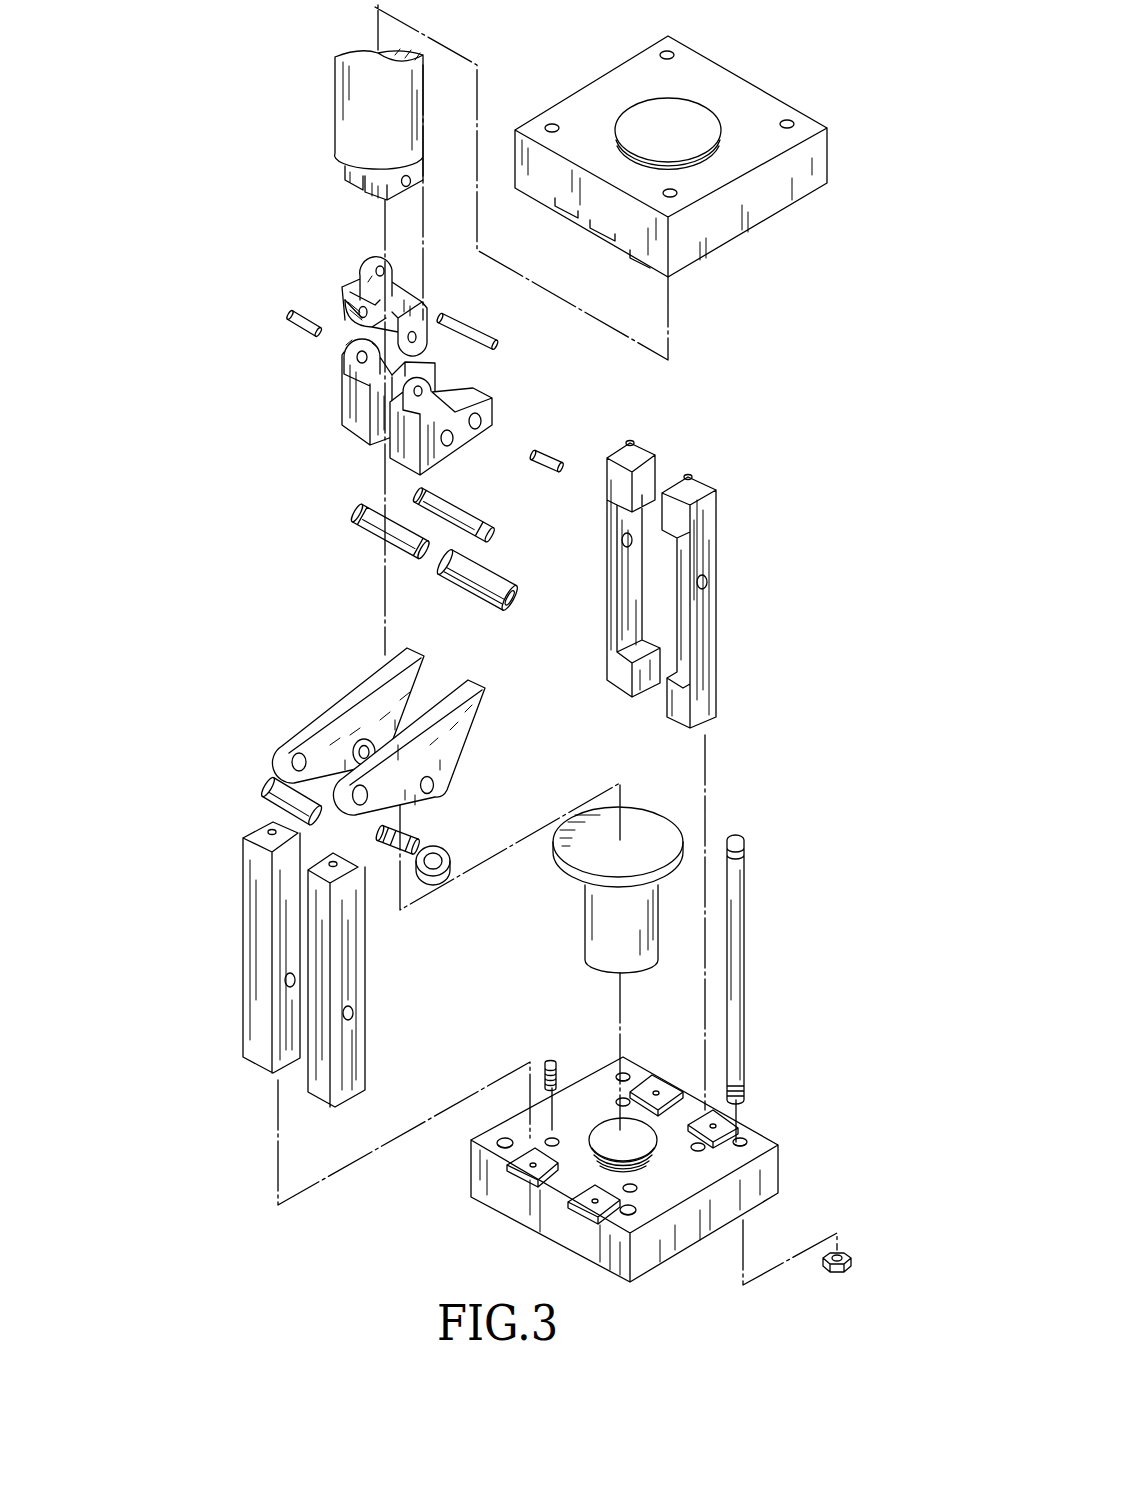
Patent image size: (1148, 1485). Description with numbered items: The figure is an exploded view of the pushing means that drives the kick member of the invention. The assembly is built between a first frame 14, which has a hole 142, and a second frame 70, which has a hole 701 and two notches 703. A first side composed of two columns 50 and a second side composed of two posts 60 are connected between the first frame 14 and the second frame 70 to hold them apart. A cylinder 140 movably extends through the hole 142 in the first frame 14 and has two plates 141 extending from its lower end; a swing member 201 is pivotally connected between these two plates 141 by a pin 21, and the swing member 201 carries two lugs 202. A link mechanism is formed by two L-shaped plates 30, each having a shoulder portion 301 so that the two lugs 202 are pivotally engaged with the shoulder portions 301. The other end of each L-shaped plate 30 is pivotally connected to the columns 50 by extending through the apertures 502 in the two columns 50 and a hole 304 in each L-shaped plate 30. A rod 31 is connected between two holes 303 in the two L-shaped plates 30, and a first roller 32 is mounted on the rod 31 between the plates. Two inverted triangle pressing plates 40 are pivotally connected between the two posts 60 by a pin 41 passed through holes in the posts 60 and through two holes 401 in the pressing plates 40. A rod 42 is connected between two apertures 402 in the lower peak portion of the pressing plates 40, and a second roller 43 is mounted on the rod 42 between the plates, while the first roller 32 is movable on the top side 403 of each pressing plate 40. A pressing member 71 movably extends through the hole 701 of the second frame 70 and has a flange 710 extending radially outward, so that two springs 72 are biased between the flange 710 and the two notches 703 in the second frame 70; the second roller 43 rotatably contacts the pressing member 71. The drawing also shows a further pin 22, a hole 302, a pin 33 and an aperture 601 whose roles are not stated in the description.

The first frame 14 is at (772, 200).
The hole 142 is at (632, 108).
The cylinder 140 is at (338, 95).
The plates 141 is at (404, 185).
The swing member 201 is at (352, 262).
The lugs 202 is at (338, 307).
The pin 21 is at (483, 325).
The pin 22 is at (294, 332).
The L-shaped plate 30 is at (430, 416).
The shoulder portion 301 is at (352, 392).
The second block part hole 302 is at (421, 389).
The holes 303 is at (452, 444).
The hole 304 is at (481, 422).
The rod 31 is at (378, 532).
The first roller 32 is at (484, 598).
The pin 33 is at (466, 513).
The columns 50 is at (710, 505).
The apertures 502 is at (710, 582).
The pressing plates 40 is at (397, 716).
The holes 401 is at (298, 755).
The apertures 402 is at (434, 787).
The top side 403 is at (388, 667).
The pin 41 is at (260, 797).
The rod 42 is at (396, 846).
The second roller 43 is at (441, 851).
The posts 60 is at (243, 887).
The hole of support post 601 is at (355, 1012).
The second frame 70 is at (643, 1170).
The hole 701 is at (656, 1143).
The notches 703 is at (706, 1150).
The pressing member 71 is at (583, 923).
The flange 710 is at (663, 827).
The springs 72 is at (555, 1065).